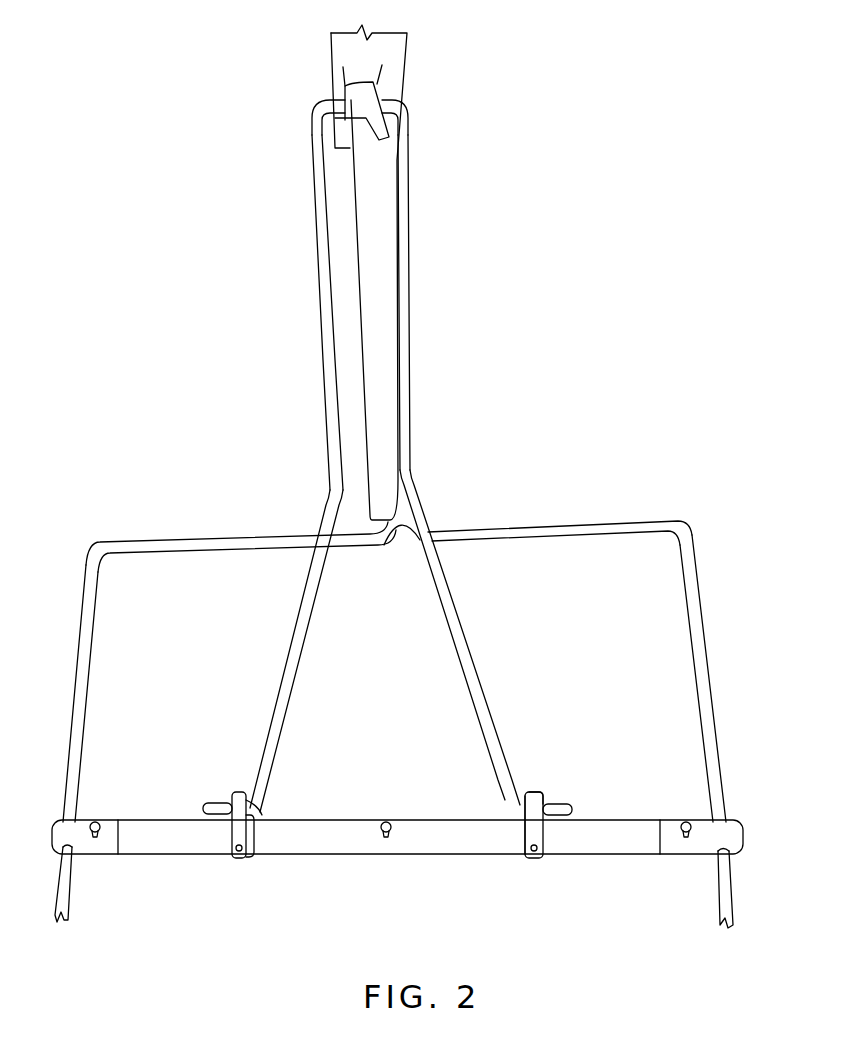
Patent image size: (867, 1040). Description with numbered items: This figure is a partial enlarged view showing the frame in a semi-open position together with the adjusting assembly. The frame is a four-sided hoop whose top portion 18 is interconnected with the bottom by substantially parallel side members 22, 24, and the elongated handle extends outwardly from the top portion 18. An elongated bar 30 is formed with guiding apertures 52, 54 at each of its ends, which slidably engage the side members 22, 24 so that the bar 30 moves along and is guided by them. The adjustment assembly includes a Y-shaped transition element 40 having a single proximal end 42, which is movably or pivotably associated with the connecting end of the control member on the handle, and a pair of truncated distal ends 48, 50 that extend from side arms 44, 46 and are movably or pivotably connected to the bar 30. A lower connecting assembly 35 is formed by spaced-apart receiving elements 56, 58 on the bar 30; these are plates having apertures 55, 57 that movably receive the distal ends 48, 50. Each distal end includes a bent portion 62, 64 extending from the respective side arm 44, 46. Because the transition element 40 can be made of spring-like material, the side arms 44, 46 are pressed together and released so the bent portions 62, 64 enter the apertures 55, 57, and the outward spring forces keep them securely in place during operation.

The top portion 18 is at (517, 527).
The side member 22 is at (73, 696).
The side member 24 is at (705, 676).
The elongated bar 30 is at (592, 850).
The lower connecting assembly 35 is at (545, 766).
The transition element 40 is at (432, 368).
The proximal end 42 is at (330, 103).
The side arm 44 is at (333, 443).
The side arm 46 is at (405, 440).
The distal end 48 is at (265, 778).
The distal end 50 is at (478, 780).
The guiding aperture 52 is at (72, 847).
The guiding aperture 54 is at (718, 852).
The aperture 55 is at (255, 825).
The receiving element 56 is at (237, 830).
The aperture 57 is at (560, 803).
The receiving element 58 is at (525, 828).
The bent portion 62 is at (213, 806).
The bent portion 64 is at (572, 808).